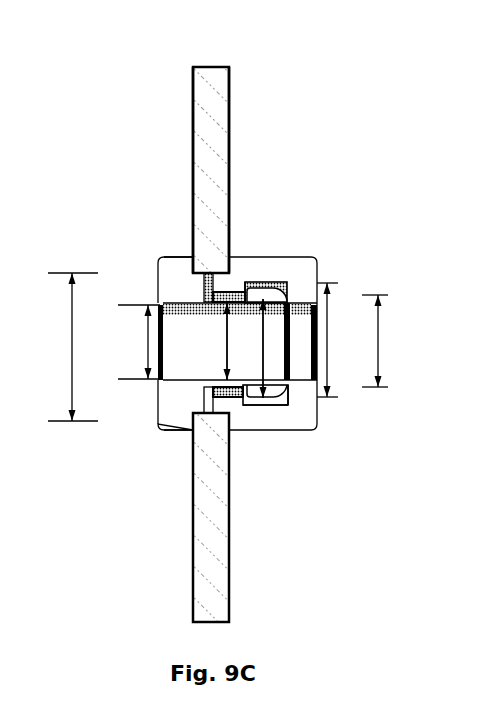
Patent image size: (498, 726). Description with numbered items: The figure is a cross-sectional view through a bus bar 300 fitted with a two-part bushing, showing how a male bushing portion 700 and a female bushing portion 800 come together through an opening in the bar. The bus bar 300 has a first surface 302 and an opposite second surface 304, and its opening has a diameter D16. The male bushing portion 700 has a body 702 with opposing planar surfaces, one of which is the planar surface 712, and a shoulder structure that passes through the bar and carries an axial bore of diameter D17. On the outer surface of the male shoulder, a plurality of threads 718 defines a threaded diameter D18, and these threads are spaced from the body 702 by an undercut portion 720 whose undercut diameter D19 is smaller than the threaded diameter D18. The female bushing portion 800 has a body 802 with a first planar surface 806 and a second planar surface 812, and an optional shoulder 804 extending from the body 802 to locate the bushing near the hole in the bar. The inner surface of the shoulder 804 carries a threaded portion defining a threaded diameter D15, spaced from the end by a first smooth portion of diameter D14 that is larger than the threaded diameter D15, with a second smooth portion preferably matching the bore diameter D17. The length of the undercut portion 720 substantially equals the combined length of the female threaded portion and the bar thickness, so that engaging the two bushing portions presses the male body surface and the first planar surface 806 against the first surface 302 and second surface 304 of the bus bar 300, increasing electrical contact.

The bus bar 300 is at (212, 102).
The first surface of the bus bar 302 is at (193, 80).
The second surface of the bus bar 304 is at (230, 80).
The male bushing portion 700 is at (165, 450).
The body of the male bushing portion 702 is at (170, 272).
The planar surface of the male bushing body 712 is at (157, 420).
The threads 718 is at (265, 296).
The undercut portion 720 is at (221, 385).
The female bushing portion 800 is at (275, 442).
The body of the female bushing portion 802 is at (295, 282).
The shoulder of the female bushing portion 804 is at (225, 282).
The first planar surface of the female bushing body 806 is at (205, 288).
The second planar surface of the female bushing body 812 is at (317, 422).
The first smooth diameter D14 is at (343, 340).
The threaded diameter of the female bushing D15 is at (392, 341).
The diameter of the bus bar opening D16 is at (63, 347).
The diameter of the axial bore D17 is at (132, 342).
The threaded diameter of the male bushing D18 is at (258, 357).
The undercut diameter D19 is at (207, 341).